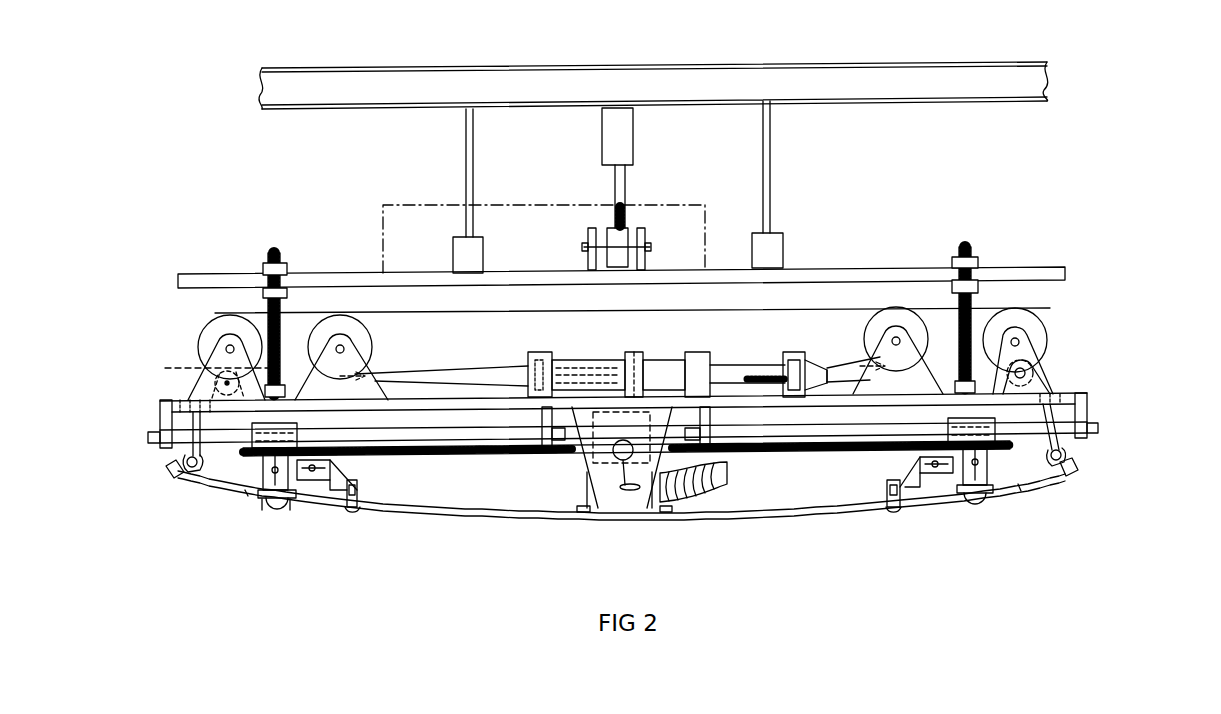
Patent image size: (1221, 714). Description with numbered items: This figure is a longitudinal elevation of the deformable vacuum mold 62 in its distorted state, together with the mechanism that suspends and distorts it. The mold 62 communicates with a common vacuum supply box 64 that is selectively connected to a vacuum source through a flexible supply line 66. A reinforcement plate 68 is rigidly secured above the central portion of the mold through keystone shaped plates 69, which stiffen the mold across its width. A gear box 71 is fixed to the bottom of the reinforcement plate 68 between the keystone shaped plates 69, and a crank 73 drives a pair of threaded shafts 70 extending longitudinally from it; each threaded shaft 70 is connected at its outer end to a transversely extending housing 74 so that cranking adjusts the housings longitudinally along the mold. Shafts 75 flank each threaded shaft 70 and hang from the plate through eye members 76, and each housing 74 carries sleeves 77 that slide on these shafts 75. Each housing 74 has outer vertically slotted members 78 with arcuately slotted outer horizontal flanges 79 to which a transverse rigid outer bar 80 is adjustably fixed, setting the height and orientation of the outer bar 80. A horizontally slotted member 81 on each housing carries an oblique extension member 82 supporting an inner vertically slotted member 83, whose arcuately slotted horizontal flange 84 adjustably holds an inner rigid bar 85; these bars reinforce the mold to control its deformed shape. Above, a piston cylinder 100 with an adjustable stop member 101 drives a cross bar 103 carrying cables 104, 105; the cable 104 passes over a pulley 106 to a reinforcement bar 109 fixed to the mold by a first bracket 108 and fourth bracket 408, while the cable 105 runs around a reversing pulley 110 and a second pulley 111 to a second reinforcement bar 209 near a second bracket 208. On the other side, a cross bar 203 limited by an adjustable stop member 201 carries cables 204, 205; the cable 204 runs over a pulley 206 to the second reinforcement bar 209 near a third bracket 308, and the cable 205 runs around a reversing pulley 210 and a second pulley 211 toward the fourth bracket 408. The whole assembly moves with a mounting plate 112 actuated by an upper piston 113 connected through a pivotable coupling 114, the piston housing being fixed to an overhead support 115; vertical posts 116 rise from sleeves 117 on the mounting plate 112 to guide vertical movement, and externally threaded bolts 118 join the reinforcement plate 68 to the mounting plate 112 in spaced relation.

The deformable vacuum mold 62 is at (522, 522).
The common vacuum supply box 64 is at (586, 494).
The flexible supply line 66 is at (729, 476).
The reinforcement plate 68 is at (160, 400).
The keystone shaped plates 69 is at (576, 462).
The threaded shafts 70 is at (402, 457).
The gear box 71 is at (600, 432).
The crank 73 is at (634, 494).
The transversely extending housing 74 is at (263, 467).
The shafts 75 is at (431, 421).
The eye members 76 is at (160, 420).
The sleeves 77 is at (297, 426).
The outer vertically slotted members 78 is at (262, 504).
The arcuately slotted outer horizontal flanges 79 is at (290, 502).
The transverse rigid outer bar 80 is at (264, 510).
The horizontally slotted member 81 is at (312, 481).
The oblique extension member 82 is at (345, 477).
The inner vertically slotted member 83 is at (358, 497).
The arcuately slotted horizontal flange 84 is at (360, 514).
The inner rigid bar 85 is at (356, 518).
The piston cylinder 100 is at (678, 352).
The adjustable stop member 101 is at (790, 365).
The cross bar 103 is at (800, 352).
The cable 104 is at (836, 372).
The cable 105 is at (827, 355).
The pulley 106 is at (1040, 375).
The first bracket 108 is at (1074, 474).
The reinforcement bar 109 is at (1064, 455).
The reversing pulley 110 is at (925, 345).
The second pulley 111 is at (202, 337).
The mounting plate 112 is at (845, 268).
The upper piston 113 is at (621, 192).
The pivotable coupling 114 is at (645, 263).
The overhead support 115 is at (528, 101).
The vertical posts 116 is at (466, 140).
The sleeves 117 is at (453, 256).
The externally threaded bolts 118 is at (281, 311).
The adjustable stop member 201 is at (590, 352).
The cross bar 203 is at (578, 340).
The cable 204 is at (520, 352).
The cable 205 is at (442, 372).
The pulley 206 is at (246, 378).
The second bracket 208 is at (186, 460).
The second reinforcement bar 209 is at (170, 474).
The reversing pulley 210 is at (373, 347).
The second pulley 211 is at (1046, 330).
The third bracket 308 is at (245, 497).
The fourth bracket 408 is at (1020, 493).